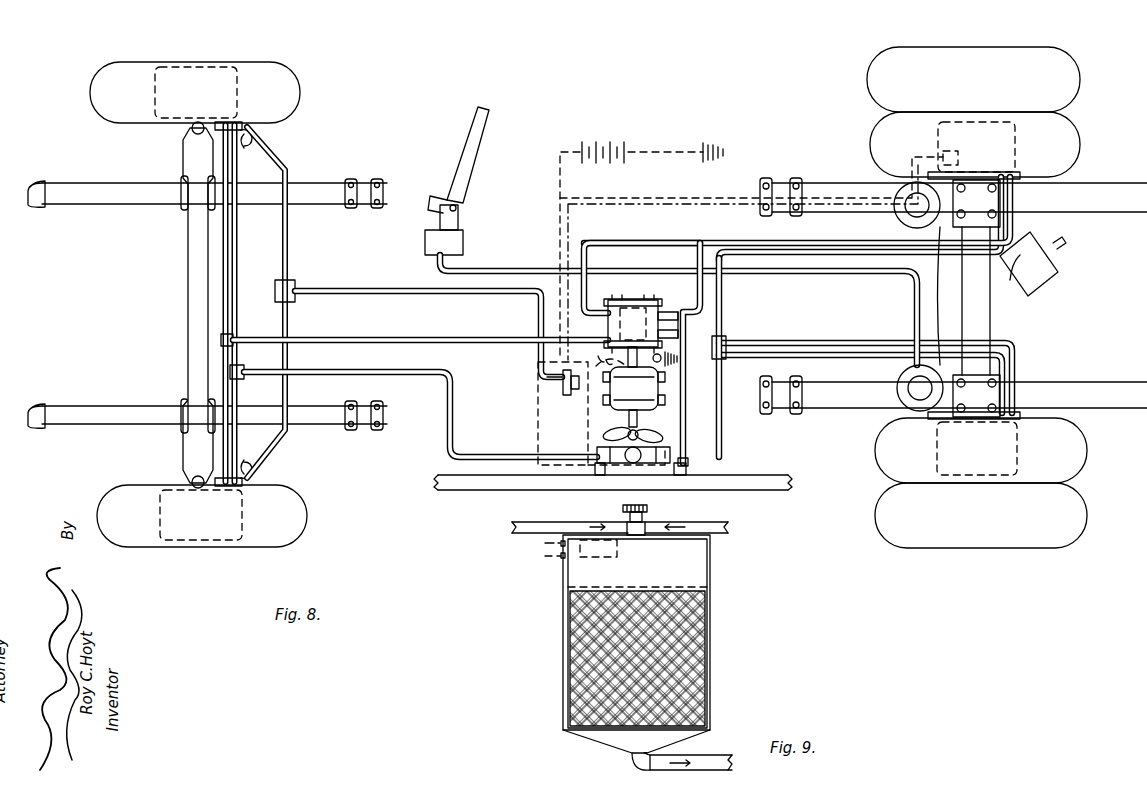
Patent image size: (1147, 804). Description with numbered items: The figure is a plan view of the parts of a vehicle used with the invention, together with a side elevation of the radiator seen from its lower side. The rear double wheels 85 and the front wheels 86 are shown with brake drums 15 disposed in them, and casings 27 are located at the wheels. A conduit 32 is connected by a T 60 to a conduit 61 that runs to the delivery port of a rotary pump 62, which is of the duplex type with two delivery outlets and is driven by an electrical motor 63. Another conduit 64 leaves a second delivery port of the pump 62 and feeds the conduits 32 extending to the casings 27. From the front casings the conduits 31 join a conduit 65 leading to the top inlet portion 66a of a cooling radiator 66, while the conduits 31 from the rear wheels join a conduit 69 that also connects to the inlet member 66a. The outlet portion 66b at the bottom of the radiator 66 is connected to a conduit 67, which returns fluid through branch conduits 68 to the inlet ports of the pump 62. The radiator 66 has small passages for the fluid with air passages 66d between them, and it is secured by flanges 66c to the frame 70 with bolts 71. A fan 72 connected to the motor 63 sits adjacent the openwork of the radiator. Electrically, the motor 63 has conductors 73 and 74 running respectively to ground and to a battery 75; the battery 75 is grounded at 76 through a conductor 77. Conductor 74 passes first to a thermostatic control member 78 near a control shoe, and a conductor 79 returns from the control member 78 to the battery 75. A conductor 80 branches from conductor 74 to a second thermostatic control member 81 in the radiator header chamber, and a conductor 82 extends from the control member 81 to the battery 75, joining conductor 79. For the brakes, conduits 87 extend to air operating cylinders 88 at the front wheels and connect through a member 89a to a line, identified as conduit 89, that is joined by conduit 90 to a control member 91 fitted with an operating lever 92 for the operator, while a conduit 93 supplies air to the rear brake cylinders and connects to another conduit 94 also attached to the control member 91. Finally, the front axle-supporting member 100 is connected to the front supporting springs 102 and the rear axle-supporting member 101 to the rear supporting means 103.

In FIG. 8, the brake drum 15 is at (225, 90).
In FIG. 8, the casing 27 is at (250, 128).
In FIG. 8, the conduit 31 is at (229, 247).
In FIG. 8, the conduit 32 is at (236, 288).
In FIG. 8, the T 60 is at (233, 340).
In FIG. 8, the conduit 61 is at (325, 340).
In FIG. 8, the rotary pump 62 is at (612, 327).
In FIG. 8, the motor 63 is at (612, 394).
In FIG. 8, the conduit 64 is at (594, 248).
In FIG. 8, the conduit 65 is at (422, 376).
In FIG. 9, the conduit 65 is at (534, 528).
In FIG. 9, the cooling radiator 66 is at (712, 603).
In FIG. 9, the top inlet portion 66a is at (624, 514).
In FIG. 9, the outlet portion 66b is at (636, 765).
In FIG. 8, the flanges 66c is at (595, 470).
In FIG. 9, the air passages 66d is at (705, 636).
In FIG. 8, the conduit 67 is at (688, 400).
In FIG. 9, the conduit 67 is at (726, 754).
In FIG. 8, the branch conduits 68 is at (683, 318).
In FIG. 8, the conduit 69 is at (724, 425).
In FIG. 9, the conduit 69 is at (672, 522).
In FIG. 8, the frame 70 is at (743, 478).
In FIG. 8, the bolts 71 is at (684, 457).
In FIG. 8, the fan 72 is at (641, 432).
In FIG. 8, the conductor 73 is at (662, 362).
In FIG. 8, the conductor 74 is at (604, 348).
In FIG. 8, the battery 75 is at (598, 146).
In FIG. 8, the ground 76 is at (715, 148).
In FIG. 8, the conductor 77 is at (652, 155).
In FIG. 8, the thermostatic control member 78 is at (960, 158).
In FIG. 8, the conductor 79 is at (700, 200).
In FIG. 8, the conductor 80 is at (588, 422).
In FIG. 9, the conductor 80 is at (545, 545).
In FIG. 8, the thermostatic control member 81 is at (633, 465).
In FIG. 9, the thermostatic control member 81 is at (612, 556).
In FIG. 8, the conductor 82 is at (540, 420).
In FIG. 9, the conductor 82 is at (545, 558).
In FIG. 8, the rear double wheels 85 is at (880, 95).
In FIG. 8, the front wheels 86 is at (300, 88).
In FIG. 8, the conduits 87 is at (287, 244).
In FIG. 8, the air operating cylinders 88 is at (251, 304).
In FIG. 8, the pipe 89 is at (388, 290).
In FIG. 8, the member 89a is at (295, 290).
In FIG. 8, the conduit 90 is at (434, 270).
In FIG. 8, the control member 91 is at (425, 242).
In FIG. 8, the operating lever 92 is at (462, 160).
In FIG. 8, the conduit 93 is at (925, 296).
In FIG. 8, the conduit 94 is at (752, 275).
In FIG. 8, the front axle-supporting member 100 is at (190, 260).
In FIG. 8, the rear axle-supporting member 101 is at (996, 300).
In FIG. 8, the front supporting springs 102 is at (112, 208).
In FIG. 8, the rear supporting means 103 is at (1090, 204).